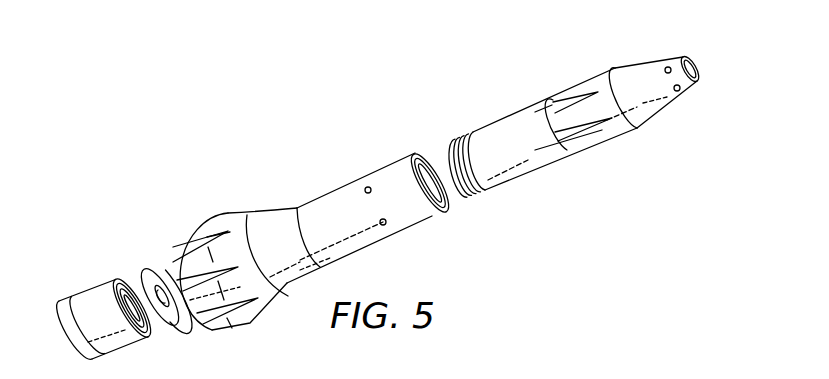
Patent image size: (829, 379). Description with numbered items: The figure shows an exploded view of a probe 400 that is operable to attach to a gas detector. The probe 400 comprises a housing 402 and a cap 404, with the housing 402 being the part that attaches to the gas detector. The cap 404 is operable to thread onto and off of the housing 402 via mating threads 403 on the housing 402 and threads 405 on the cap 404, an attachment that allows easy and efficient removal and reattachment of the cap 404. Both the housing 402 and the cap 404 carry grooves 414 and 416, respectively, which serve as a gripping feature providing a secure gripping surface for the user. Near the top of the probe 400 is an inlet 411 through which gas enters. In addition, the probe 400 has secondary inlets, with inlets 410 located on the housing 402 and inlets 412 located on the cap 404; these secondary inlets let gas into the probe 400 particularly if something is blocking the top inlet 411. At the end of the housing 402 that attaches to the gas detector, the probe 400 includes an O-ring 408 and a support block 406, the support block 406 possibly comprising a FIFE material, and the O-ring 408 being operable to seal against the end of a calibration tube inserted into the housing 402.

The probe 400 is at (306, 138).
The housing 402 is at (230, 214).
The threads 403 is at (427, 157).
The cap 404 is at (500, 117).
The threads 405 is at (487, 192).
The support block 406 is at (98, 286).
The O-ring 408 is at (143, 268).
The inlets 410 is at (399, 231).
The inlet 411 is at (698, 62).
The inlets 412 is at (652, 42).
The grooves 414 is at (233, 323).
The grooves 416 is at (600, 150).